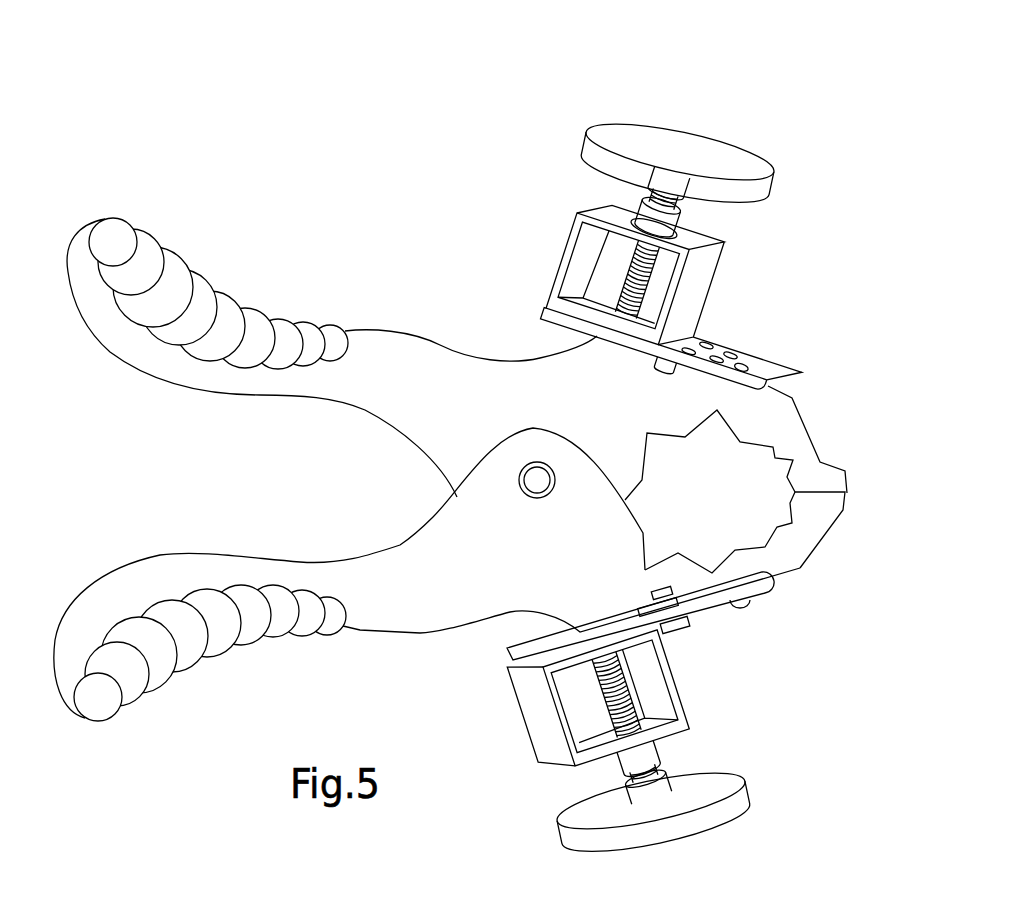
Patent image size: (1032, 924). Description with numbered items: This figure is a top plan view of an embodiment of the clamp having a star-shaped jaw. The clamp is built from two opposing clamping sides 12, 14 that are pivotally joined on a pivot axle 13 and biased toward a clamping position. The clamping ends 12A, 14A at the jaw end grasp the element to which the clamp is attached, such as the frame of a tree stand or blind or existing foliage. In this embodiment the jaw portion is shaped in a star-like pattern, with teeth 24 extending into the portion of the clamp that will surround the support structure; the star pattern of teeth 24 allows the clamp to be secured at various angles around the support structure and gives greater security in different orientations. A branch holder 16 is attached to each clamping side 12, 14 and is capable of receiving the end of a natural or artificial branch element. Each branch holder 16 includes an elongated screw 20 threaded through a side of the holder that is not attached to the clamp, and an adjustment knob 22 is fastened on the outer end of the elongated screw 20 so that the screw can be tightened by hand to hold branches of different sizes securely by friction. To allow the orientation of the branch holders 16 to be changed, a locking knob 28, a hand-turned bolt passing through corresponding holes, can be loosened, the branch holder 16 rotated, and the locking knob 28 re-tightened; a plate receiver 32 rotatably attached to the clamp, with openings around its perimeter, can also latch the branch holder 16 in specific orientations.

The clamping side 12 is at (440, 358).
The clamping end 12A is at (827, 477).
The pivot axle 13 is at (537, 480).
The clamping side 14 is at (387, 618).
The clamping end 14A is at (830, 505).
The branch holder 16 is at (720, 272).
The elongated screw 20 is at (650, 193).
The adjustment knob 22 is at (622, 130).
The teeth 24 is at (683, 427).
The locking knob 28 is at (745, 367).
The plate receiver 32 is at (722, 347).